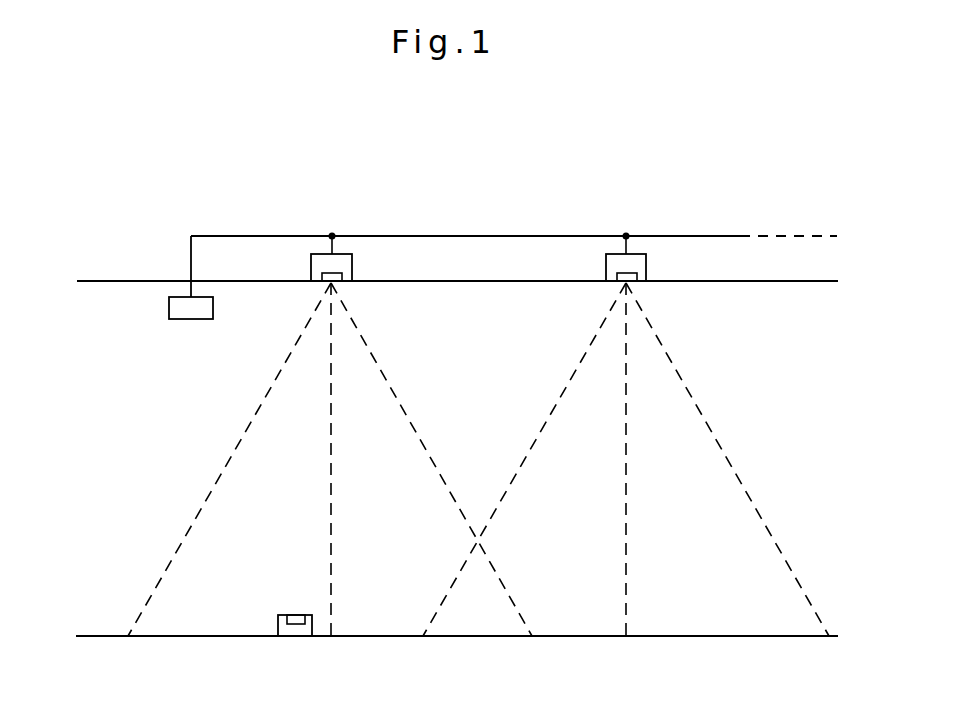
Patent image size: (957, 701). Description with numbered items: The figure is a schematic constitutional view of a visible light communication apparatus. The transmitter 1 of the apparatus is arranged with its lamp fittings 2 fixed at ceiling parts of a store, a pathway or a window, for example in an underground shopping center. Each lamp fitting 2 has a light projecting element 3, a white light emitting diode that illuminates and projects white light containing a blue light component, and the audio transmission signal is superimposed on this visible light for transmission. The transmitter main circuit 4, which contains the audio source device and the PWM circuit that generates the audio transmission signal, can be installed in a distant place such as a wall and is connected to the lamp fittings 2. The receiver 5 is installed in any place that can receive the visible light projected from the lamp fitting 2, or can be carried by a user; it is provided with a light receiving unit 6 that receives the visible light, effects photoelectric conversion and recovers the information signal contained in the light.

The transmitter 1 is at (345, 203).
The lamp fitting 2 is at (353, 267).
The light projecting element 3 is at (327, 278).
The transmitter main circuit 4 is at (168, 307).
The receiver 5 is at (277, 625).
The light receiving unit 6 is at (298, 615).